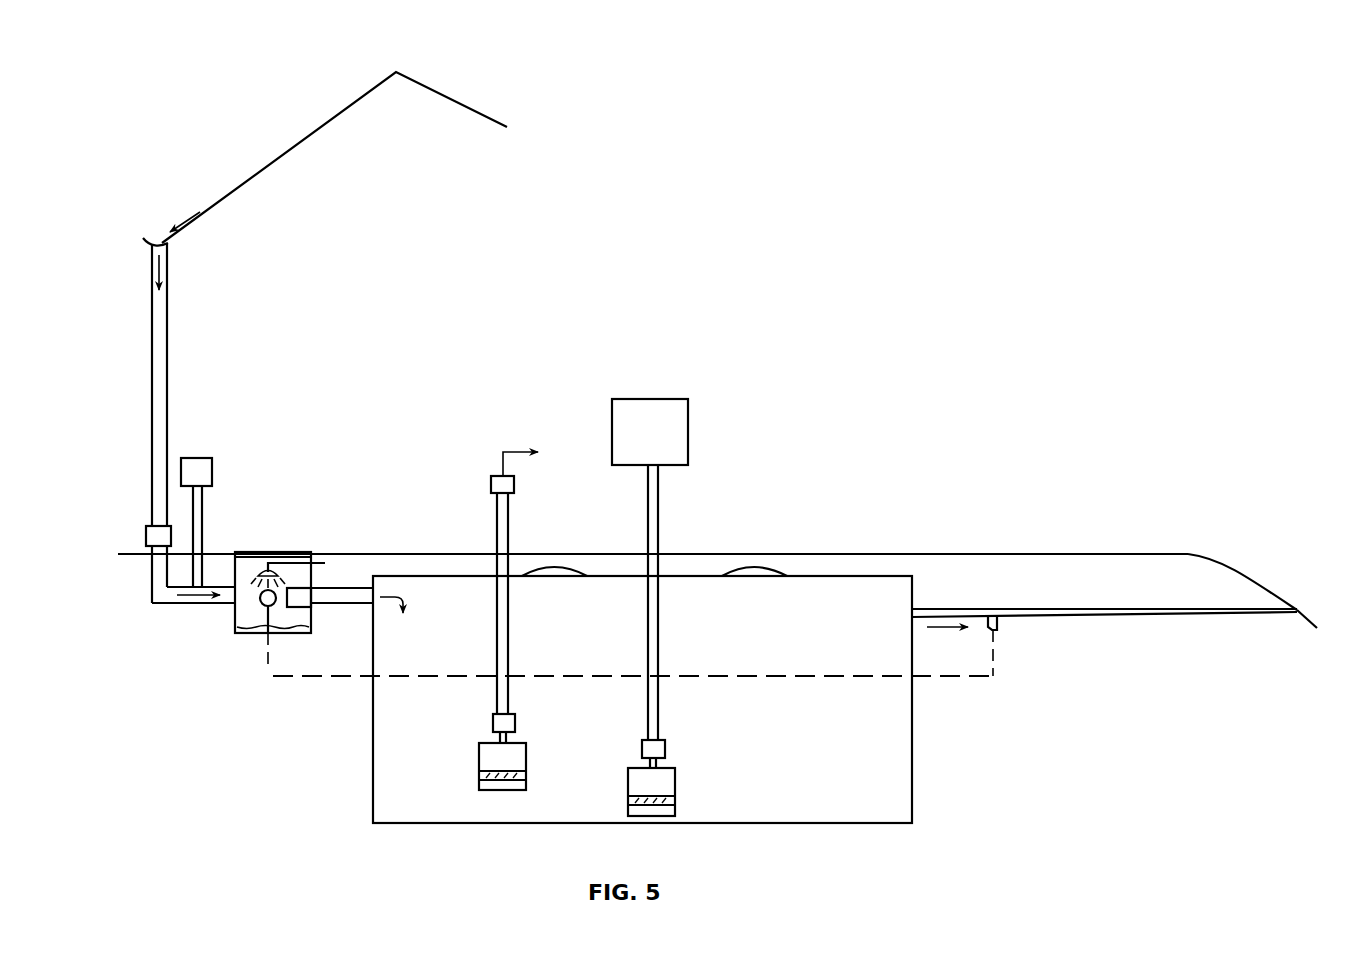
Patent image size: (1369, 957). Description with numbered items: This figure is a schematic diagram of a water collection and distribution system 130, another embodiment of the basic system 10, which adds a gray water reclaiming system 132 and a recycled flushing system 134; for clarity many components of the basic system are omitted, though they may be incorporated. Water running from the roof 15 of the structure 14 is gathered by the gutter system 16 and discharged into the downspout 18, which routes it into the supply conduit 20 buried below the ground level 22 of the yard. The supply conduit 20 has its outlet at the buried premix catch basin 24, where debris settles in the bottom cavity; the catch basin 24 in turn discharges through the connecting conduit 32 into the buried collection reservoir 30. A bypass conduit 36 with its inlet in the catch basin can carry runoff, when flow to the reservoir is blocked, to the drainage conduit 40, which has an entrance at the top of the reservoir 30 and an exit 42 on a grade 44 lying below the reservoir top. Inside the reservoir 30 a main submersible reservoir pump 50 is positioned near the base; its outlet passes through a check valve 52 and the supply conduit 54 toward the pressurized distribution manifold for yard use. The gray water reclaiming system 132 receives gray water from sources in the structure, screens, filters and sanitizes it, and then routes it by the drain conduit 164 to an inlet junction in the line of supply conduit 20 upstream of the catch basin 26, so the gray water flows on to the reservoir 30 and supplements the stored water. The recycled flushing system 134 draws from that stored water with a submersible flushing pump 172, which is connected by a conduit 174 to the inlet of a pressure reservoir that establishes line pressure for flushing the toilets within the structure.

The water collection and distribution system 10 is at (1140, 745).
The structure 14 is at (397, 162).
The roof 15 is at (262, 169).
The gutter system 16 is at (167, 245).
The downspout 18 is at (165, 340).
The supply conduit 20 is at (157, 604).
The ground level 22 is at (1251, 501).
The premix catch basin 24 is at (237, 613).
The catch basin 26 is at (243, 633).
The collection reservoir 30 is at (912, 780).
The connecting conduit 32 is at (345, 604).
The bypass conduit 36 is at (978, 677).
The drainage conduit 40 is at (1163, 615).
The exit 42 is at (1297, 608).
The grade 44 is at (1248, 577).
The reservoir pump 50 is at (479, 755).
The check valve 52 is at (515, 717).
The supply conduit 54 is at (508, 594).
The water collection and distribution system 130 is at (790, 345).
The gray water reclaiming system 132 is at (240, 447).
The recycled flushing system 134 is at (727, 466).
The drain conduit 164 is at (198, 516).
The flushing pump 172 is at (676, 780).
The conduit 174 is at (658, 616).